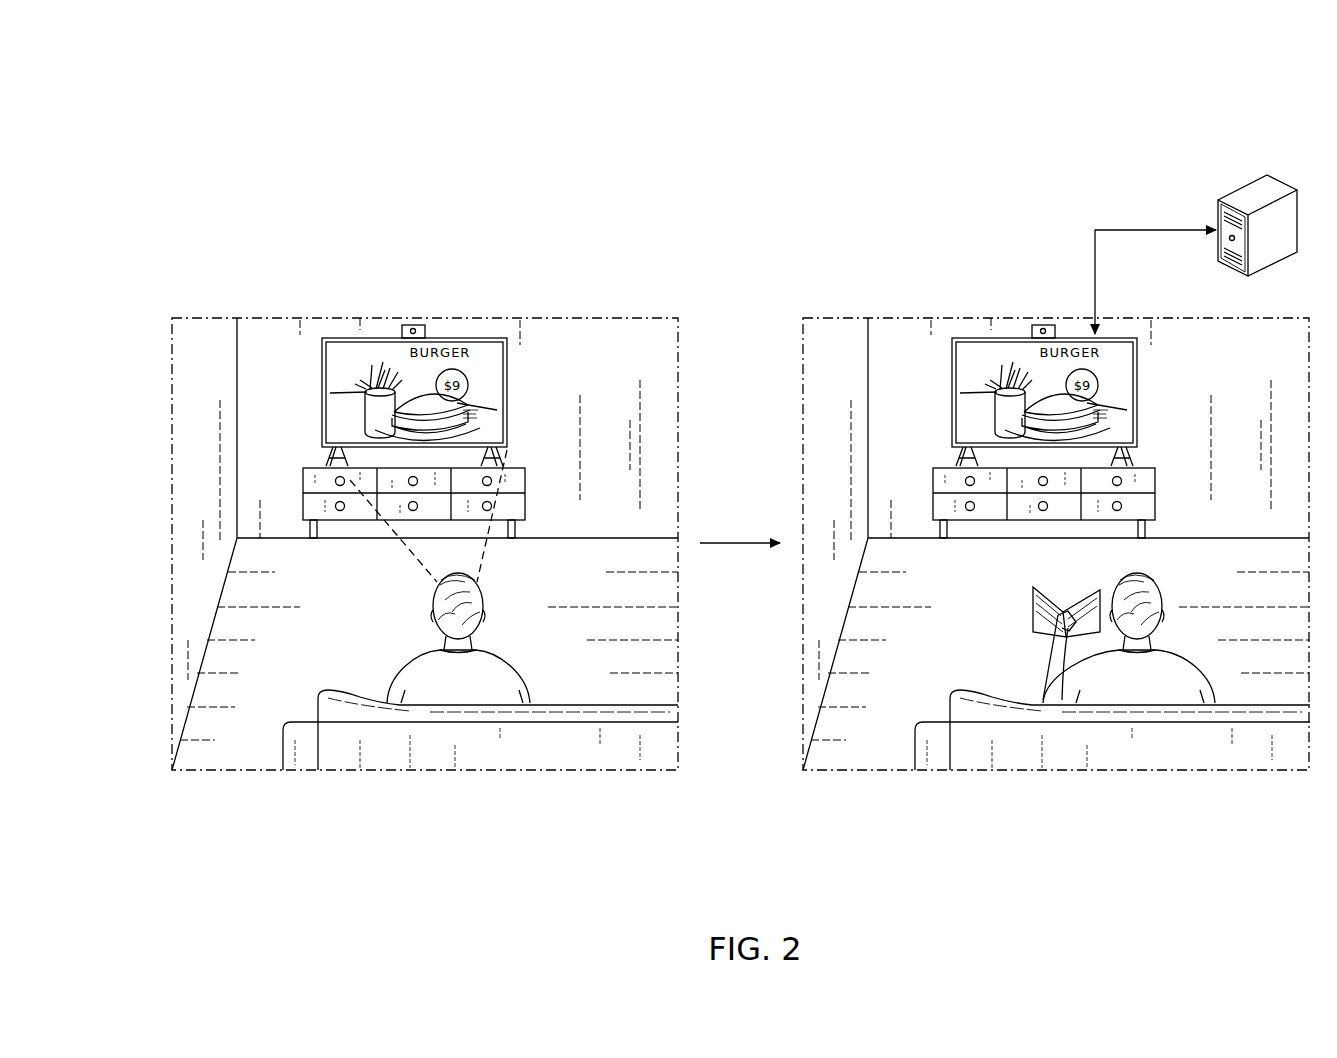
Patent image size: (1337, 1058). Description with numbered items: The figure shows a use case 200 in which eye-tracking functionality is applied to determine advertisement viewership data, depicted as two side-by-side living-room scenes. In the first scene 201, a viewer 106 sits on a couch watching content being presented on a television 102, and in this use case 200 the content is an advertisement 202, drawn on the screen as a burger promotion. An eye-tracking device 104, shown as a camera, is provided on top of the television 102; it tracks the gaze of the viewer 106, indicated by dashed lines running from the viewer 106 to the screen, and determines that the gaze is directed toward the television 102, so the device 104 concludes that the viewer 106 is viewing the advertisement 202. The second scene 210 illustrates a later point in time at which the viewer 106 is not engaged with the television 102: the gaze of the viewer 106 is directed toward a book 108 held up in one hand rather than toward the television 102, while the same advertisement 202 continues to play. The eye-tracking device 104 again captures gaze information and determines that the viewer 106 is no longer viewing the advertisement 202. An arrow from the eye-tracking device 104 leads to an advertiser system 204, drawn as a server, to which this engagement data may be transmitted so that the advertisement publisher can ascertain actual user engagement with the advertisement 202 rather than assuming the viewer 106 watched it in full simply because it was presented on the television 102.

The use case 200 is at (228, 86).
The scene 201 is at (234, 316).
The scene 210 is at (864, 316).
The television 102 is at (330, 338).
The eye-tracking device 104 is at (416, 325).
The advertisement 202 is at (490, 372).
The viewer 106 is at (497, 584).
The book 108 is at (1081, 600).
The advertiser system 204 is at (1218, 188).